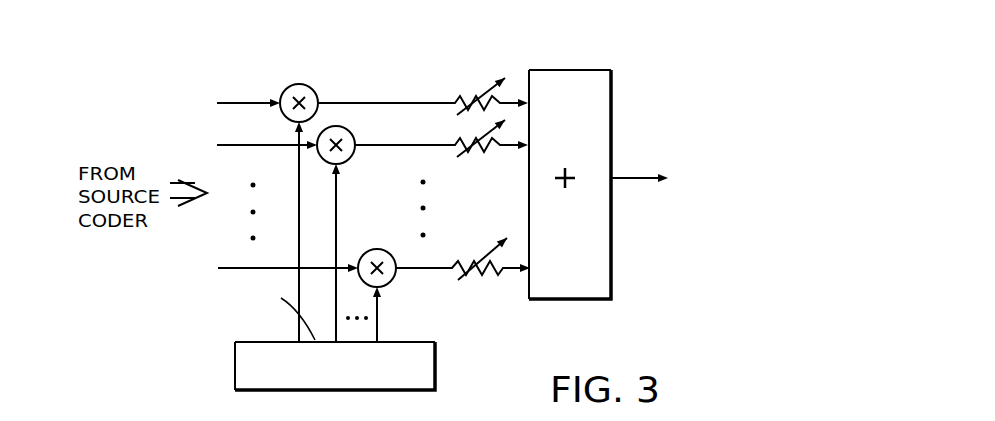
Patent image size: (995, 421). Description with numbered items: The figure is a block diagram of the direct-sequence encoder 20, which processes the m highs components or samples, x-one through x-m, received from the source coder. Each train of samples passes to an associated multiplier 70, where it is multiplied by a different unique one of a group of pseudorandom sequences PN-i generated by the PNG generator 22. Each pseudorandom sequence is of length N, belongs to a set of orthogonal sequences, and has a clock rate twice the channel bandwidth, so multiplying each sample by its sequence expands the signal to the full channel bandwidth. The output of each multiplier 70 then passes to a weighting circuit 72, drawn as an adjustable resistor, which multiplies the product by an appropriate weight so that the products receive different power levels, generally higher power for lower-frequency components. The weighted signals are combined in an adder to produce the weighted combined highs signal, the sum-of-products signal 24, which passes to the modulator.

The direct-sequence encoder 20 is at (176, 292).
The pseudorandom sequence generator 22 is at (437, 347).
The sum-of-products signal 24 is at (642, 177).
The multiplier 70 is at (307, 85).
The weighting circuit 72 is at (462, 100).